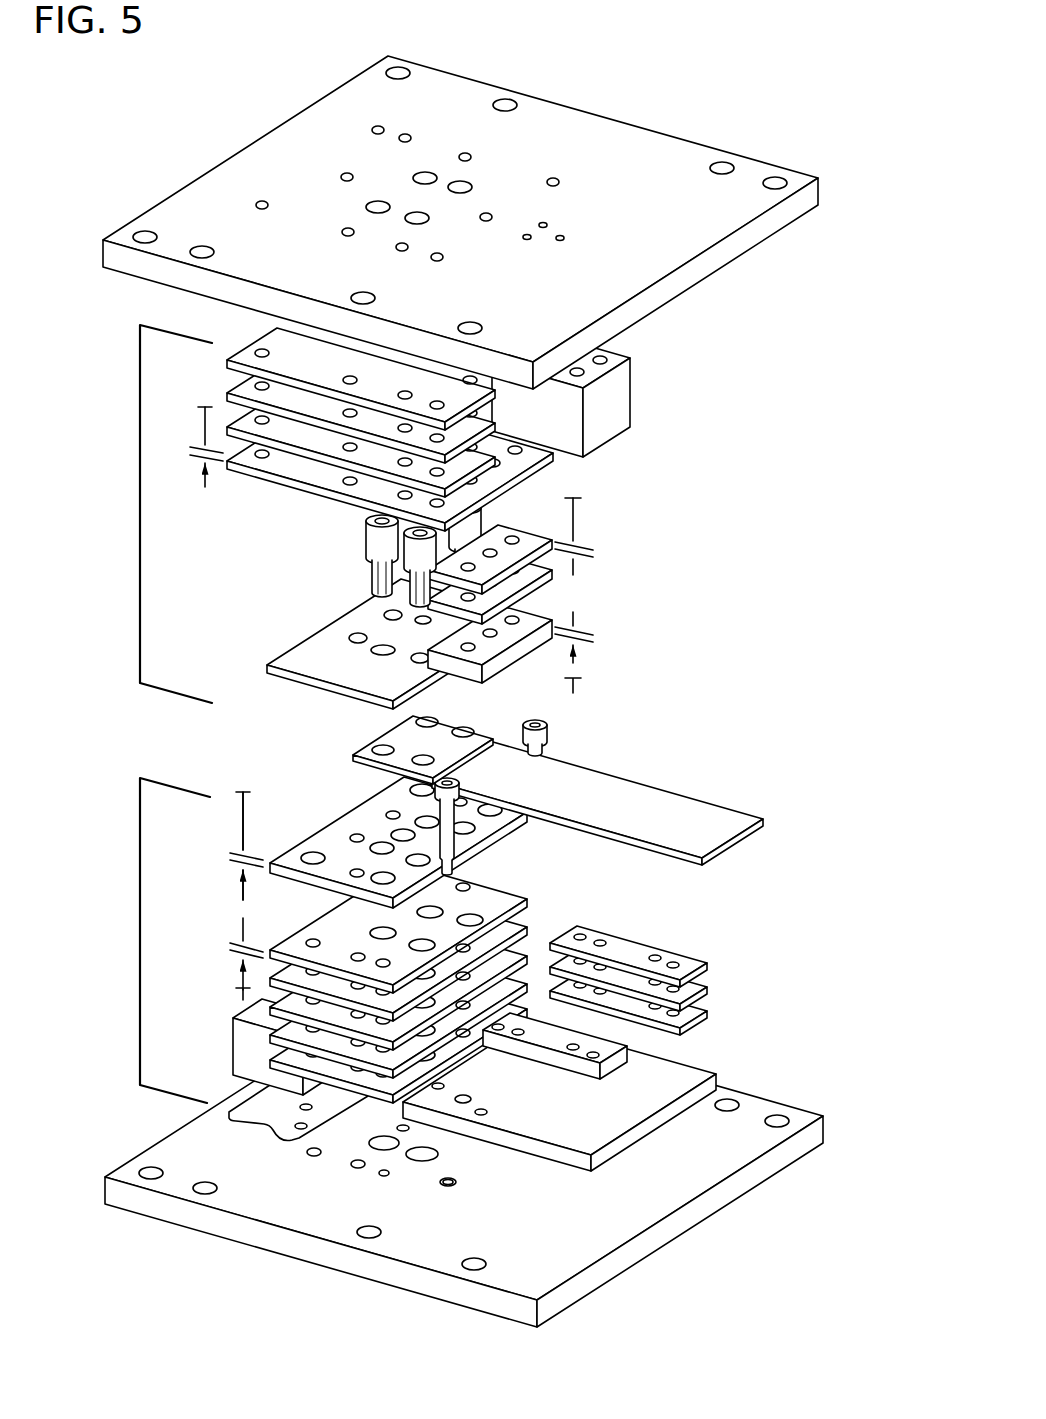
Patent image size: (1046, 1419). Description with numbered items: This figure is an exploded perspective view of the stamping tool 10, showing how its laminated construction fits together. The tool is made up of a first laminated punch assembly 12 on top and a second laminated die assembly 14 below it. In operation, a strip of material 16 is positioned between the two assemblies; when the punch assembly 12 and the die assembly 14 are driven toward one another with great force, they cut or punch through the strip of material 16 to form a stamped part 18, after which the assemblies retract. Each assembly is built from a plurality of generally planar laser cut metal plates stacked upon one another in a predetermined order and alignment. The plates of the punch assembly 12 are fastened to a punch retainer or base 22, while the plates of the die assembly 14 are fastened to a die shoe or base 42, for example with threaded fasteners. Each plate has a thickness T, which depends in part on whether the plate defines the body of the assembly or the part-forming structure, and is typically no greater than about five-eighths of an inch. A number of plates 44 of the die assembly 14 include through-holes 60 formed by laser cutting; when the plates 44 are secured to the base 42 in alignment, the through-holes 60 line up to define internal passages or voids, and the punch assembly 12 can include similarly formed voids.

The stamping tool 10 is at (798, 335).
The laminated punch assembly 12 is at (497, 458).
The laminated die assembly 14 is at (402, 994).
The strip of material 16 is at (683, 813).
The stamped part 18 is at (365, 748).
The punch retainer or base 22 is at (192, 208).
The die shoe or base 42 is at (182, 1215).
The plates of the die assembly 44 is at (330, 1028).
The through-holes 60 is at (477, 972).